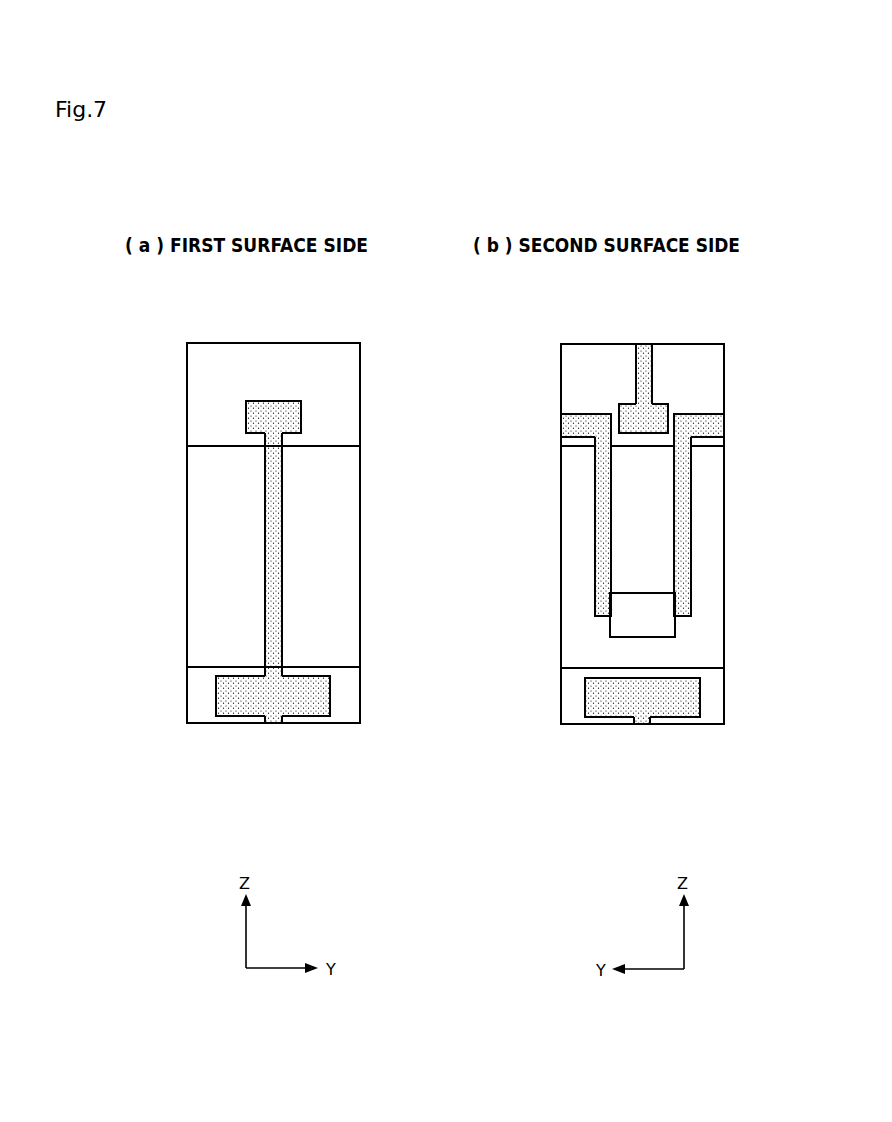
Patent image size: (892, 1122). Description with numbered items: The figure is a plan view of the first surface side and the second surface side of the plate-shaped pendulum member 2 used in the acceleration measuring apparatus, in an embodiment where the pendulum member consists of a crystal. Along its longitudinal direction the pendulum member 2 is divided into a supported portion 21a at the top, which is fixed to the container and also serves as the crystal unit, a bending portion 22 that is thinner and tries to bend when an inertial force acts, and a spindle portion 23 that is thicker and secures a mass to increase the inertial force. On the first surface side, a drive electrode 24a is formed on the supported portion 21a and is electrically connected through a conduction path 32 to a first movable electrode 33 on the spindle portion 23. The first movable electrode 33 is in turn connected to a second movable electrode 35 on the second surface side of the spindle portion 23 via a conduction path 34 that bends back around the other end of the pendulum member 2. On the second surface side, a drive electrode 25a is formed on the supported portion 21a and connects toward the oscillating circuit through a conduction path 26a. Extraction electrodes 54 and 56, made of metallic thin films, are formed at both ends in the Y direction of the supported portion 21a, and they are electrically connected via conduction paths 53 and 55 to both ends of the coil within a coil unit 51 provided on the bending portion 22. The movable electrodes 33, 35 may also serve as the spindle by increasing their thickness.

The pendulum member 2 is at (215, 763).
The supported portion 21a is at (326, 343).
The bending portion 22 is at (360, 528).
The spindle portion 23 is at (360, 678).
The drive electrode 24a is at (301, 413).
The drive electrode 25a is at (626, 404).
The conduction path 26a is at (652, 374).
The conduction path 32 is at (265, 562).
The first movable electrode 33 is at (322, 700).
The conduction path 34 is at (273, 724).
The second movable electrode 35 is at (690, 700).
The coil unit 51 is at (610, 628).
The conduction path 53 is at (595, 498).
The extraction electrode 54 is at (561, 428).
The conduction path 55 is at (691, 497).
The extraction electrode 56 is at (724, 428).